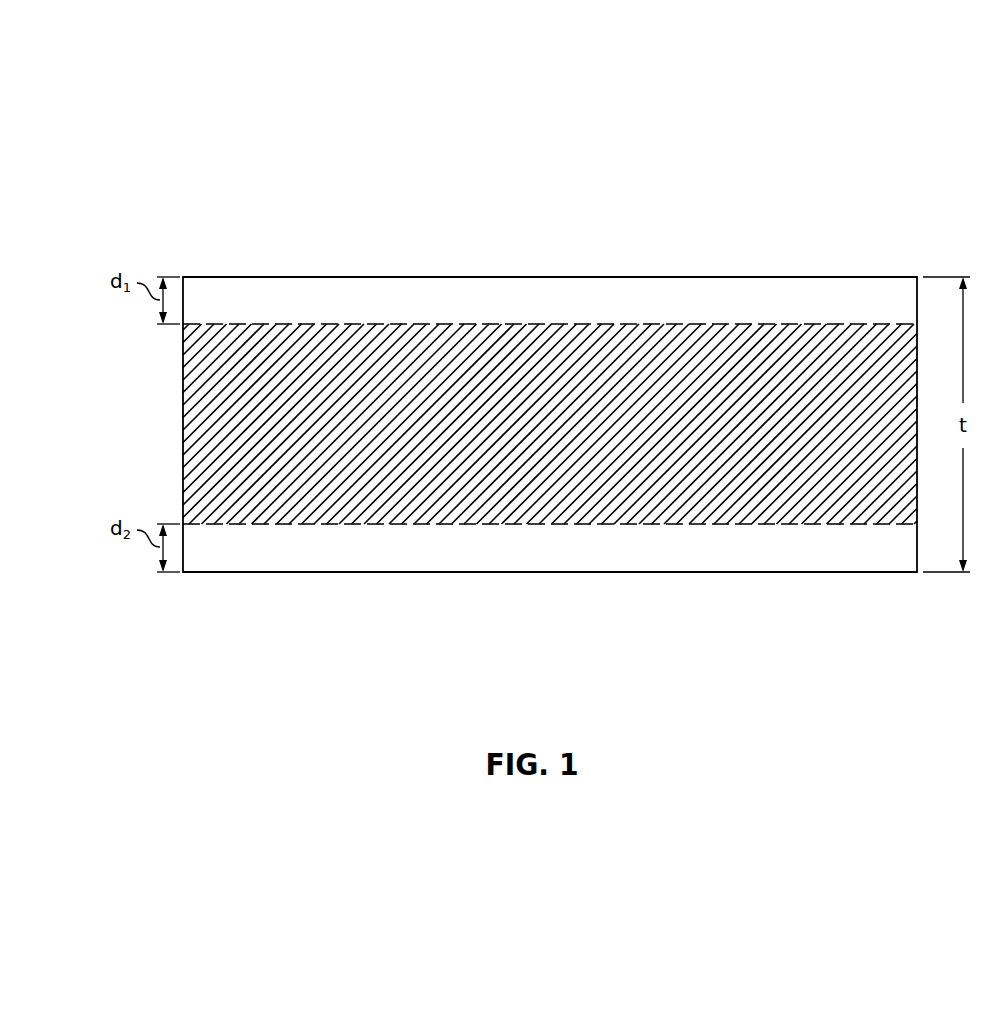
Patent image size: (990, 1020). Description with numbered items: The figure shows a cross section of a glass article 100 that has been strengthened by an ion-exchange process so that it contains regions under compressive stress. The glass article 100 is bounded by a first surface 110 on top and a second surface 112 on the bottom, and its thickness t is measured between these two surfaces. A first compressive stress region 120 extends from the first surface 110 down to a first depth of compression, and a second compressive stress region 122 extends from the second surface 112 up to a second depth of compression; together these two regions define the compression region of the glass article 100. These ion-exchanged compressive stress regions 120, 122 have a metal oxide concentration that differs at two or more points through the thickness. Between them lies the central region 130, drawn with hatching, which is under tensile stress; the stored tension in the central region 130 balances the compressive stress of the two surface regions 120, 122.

The glass article 100 is at (874, 147).
The first surface 110 is at (763, 277).
The second surface 112 is at (764, 573).
The first compressive stress region 120 is at (275, 290).
The second compressive stress region 122 is at (275, 558).
The central region 130 is at (195, 419).